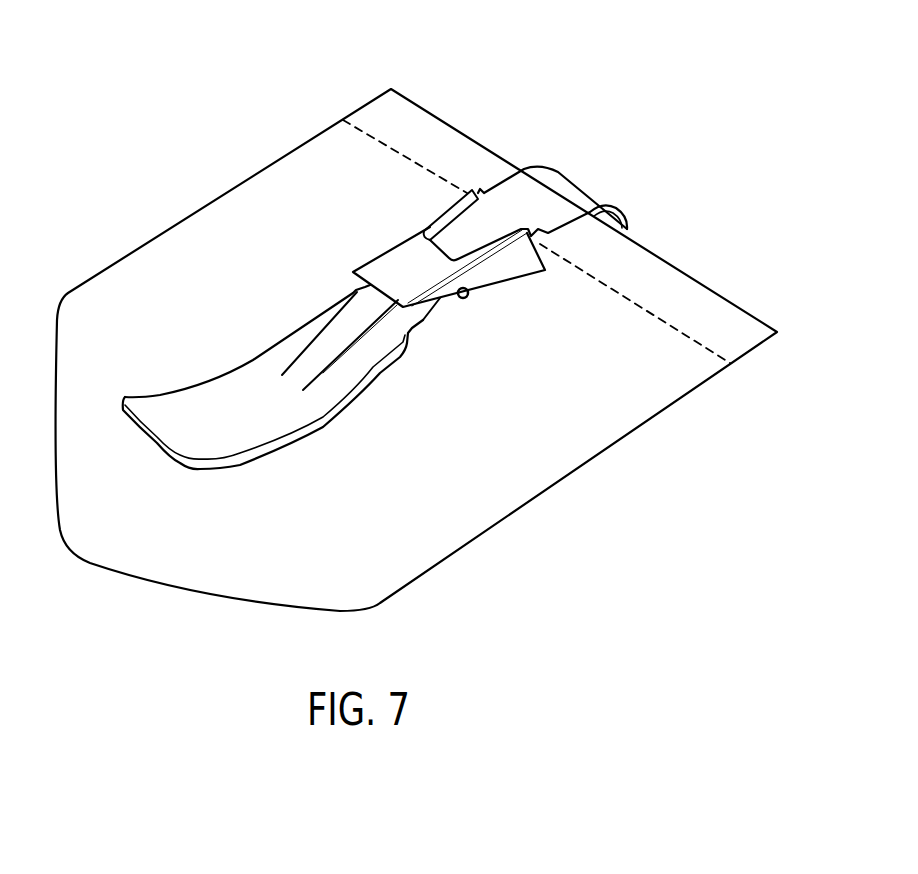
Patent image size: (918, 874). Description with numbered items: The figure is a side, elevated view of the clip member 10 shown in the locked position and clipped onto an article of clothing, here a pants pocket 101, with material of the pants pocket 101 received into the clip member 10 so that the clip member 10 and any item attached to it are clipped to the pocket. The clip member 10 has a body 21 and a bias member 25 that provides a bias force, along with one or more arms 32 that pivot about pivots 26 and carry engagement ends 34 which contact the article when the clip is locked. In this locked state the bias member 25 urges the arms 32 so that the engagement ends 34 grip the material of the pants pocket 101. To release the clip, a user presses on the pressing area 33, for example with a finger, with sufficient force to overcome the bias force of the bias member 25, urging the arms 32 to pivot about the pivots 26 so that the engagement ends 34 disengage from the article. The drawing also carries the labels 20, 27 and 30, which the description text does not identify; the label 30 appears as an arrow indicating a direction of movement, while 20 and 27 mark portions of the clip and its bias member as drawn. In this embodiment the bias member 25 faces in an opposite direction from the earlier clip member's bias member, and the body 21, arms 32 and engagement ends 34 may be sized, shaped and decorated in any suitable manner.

The clip member 10 is at (546, 88).
The clip 20 is at (535, 186).
The body 21 is at (565, 185).
The bias member 25 is at (333, 330).
The pivots 26 is at (466, 300).
The blade lip 27 is at (228, 445).
The direction of movement 30 is at (410, 272).
The arms 32 is at (370, 258).
The pressing area 33 is at (398, 252).
The engagement ends 34 is at (543, 270).
The pants pocket 101 is at (587, 460).